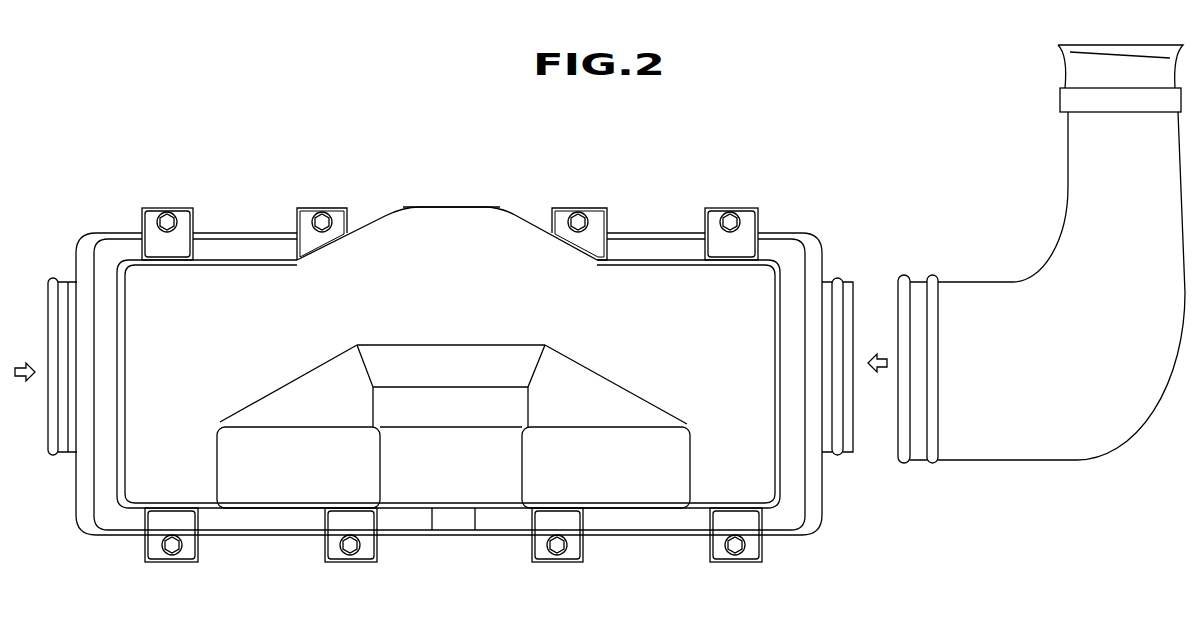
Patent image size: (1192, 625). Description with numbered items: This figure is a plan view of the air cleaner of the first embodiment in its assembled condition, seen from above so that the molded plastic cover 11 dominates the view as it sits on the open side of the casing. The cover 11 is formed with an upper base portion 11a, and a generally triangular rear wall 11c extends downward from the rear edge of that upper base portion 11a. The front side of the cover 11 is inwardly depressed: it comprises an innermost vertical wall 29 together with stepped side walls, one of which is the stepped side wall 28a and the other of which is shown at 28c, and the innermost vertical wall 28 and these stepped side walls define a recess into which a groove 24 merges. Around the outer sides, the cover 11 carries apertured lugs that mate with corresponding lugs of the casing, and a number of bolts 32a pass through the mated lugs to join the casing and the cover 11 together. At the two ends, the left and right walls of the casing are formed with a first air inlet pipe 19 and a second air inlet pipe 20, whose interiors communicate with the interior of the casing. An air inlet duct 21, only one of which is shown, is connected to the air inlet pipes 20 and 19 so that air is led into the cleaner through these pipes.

The cover 11 is at (233, 272).
The upper base portion 11a is at (423, 257).
The rear wall 11c is at (467, 206).
The first air inlet pipe 19 is at (65, 457).
The second air inlet pipe 20 is at (845, 456).
The air inlet duct 21 is at (993, 462).
The groove 24 is at (455, 490).
The innermost vertical wall 28 is at (268, 467).
The stepped side wall 28a is at (298, 396).
The inclined surface of block 28c is at (597, 390).
The innermost vertical wall 29 is at (432, 352).
The bolt 32a is at (167, 212).